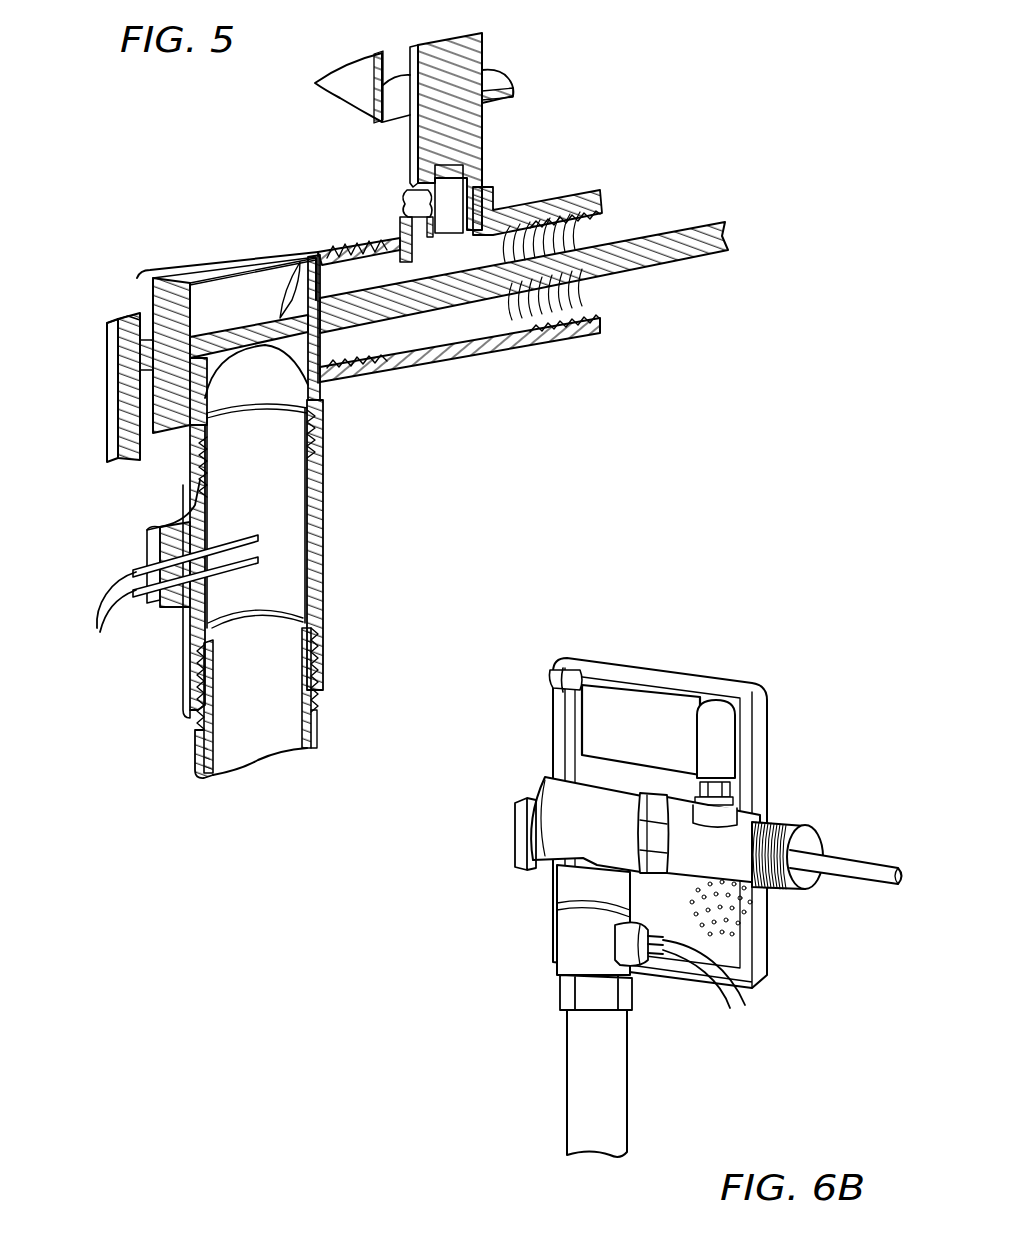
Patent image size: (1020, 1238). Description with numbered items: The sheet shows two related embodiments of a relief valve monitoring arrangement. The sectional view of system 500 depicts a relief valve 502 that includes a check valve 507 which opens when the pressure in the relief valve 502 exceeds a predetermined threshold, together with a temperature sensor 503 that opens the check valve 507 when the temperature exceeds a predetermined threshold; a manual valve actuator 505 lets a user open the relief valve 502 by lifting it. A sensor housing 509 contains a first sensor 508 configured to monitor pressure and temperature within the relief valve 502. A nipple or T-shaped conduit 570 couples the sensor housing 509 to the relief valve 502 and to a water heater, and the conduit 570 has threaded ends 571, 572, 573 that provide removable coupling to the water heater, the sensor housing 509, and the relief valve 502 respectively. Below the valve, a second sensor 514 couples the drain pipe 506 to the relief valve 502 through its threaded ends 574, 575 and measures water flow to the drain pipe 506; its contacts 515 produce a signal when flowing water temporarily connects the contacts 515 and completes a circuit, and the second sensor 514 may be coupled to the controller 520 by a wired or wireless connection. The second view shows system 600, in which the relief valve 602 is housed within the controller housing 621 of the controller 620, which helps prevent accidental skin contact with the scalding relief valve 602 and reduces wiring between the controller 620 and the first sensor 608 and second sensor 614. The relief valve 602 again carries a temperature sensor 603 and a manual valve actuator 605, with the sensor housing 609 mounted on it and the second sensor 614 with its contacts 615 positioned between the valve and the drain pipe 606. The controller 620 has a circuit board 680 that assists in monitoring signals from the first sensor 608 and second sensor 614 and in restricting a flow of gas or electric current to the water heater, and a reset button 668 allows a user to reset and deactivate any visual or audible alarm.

In FIG. 5, the system 500 is at (172, 148).
In FIG. 5, the relief valve 502 is at (205, 258).
In FIG. 5, the temperature sensor 503 is at (688, 258).
In FIG. 5, the manual valve actuator 505 is at (107, 396).
In FIG. 5, the drain pipe 506 is at (318, 737).
In FIG. 5, the check valve 507 is at (290, 300).
In FIG. 5, the first sensor 508 is at (470, 190).
In FIG. 5, the sensor housing 509 is at (484, 136).
In FIG. 5, the second sensor 514 is at (145, 540).
In FIG. 5, the contacts 515 is at (107, 616).
In FIG. 5, the controller 520 is at (350, 108).
In FIG. 5, the T-shaped conduit 570 is at (465, 366).
In FIG. 5, the threaded end 571 is at (600, 213).
In FIG. 5, the threaded end 572 is at (408, 210).
In FIG. 5, the threaded end 573 is at (385, 383).
In FIG. 5, the threaded end 574 is at (330, 440).
In FIG. 5, the threaded end 575 is at (322, 662).
In FIG. 6B, the system 600 is at (805, 640).
In FIG. 6B, the relief valve 602 is at (540, 775).
In FIG. 6B, the temperature sensor 603 is at (875, 865).
In FIG. 6B, the manual valve actuator 605 is at (515, 858).
In FIG. 6B, the drain pipe 606 is at (610, 1093).
In FIG. 6B, the first sensor 608 is at (735, 770).
In FIG. 6B, the sensor housing 609 is at (715, 716).
In FIG. 6B, the second sensor 614 is at (622, 955).
In FIG. 6B, the contacts 615 is at (704, 987).
In FIG. 6B, the controller 620 is at (770, 992).
In FIG. 6B, the controller housing 621 is at (768, 935).
In FIG. 6B, the reset button 668 is at (548, 680).
In FIG. 6B, the circuit board 680 is at (640, 700).